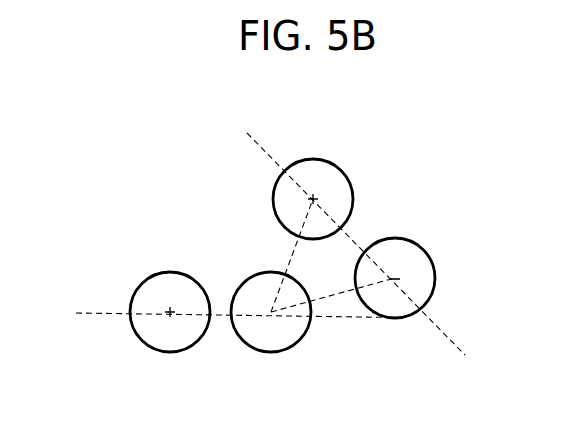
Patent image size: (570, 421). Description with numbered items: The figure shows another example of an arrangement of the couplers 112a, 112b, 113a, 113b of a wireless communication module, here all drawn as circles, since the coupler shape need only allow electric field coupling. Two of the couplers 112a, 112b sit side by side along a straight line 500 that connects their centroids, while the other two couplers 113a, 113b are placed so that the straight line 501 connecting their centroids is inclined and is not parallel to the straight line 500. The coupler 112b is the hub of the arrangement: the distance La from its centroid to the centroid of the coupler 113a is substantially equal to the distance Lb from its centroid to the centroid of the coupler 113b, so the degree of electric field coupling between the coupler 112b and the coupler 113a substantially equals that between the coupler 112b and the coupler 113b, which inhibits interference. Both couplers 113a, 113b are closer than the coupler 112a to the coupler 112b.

The straight line 500 is at (110, 312).
The straight line 501 is at (258, 145).
The coupler 112a is at (173, 352).
The coupler 112b is at (270, 351).
The coupler 113a is at (337, 165).
The coupler 113b is at (435, 277).
The distance La is at (292, 256).
The distance Lb is at (330, 300).